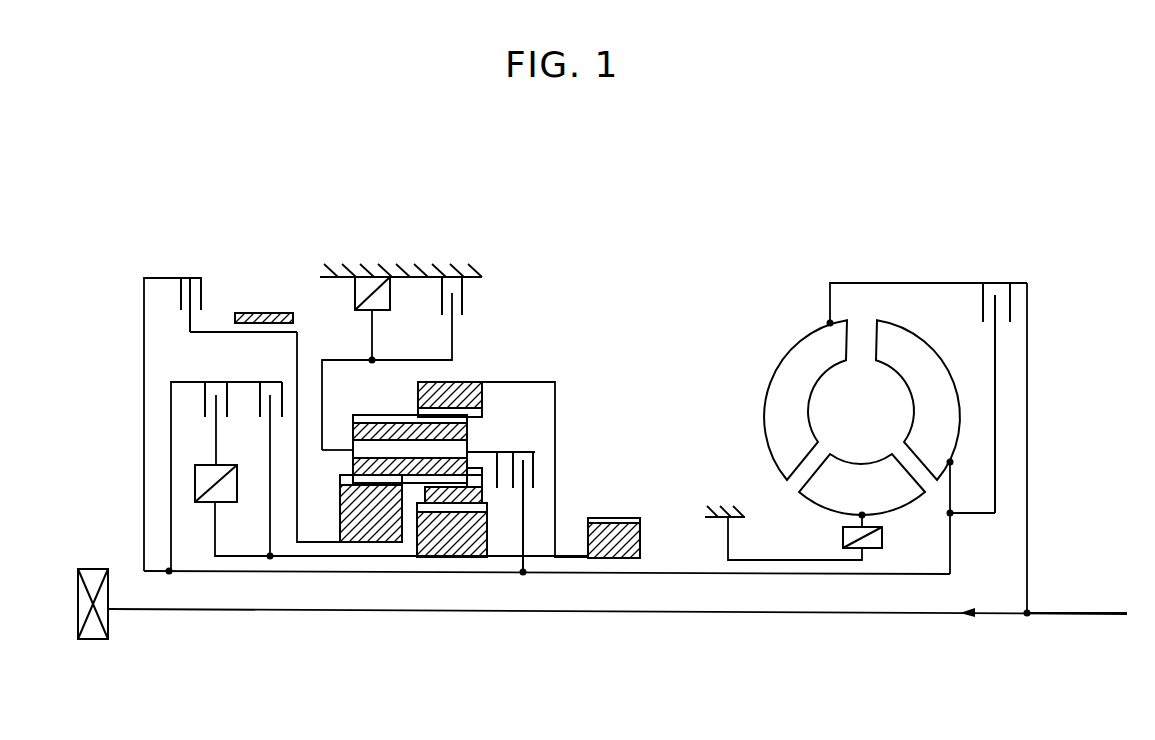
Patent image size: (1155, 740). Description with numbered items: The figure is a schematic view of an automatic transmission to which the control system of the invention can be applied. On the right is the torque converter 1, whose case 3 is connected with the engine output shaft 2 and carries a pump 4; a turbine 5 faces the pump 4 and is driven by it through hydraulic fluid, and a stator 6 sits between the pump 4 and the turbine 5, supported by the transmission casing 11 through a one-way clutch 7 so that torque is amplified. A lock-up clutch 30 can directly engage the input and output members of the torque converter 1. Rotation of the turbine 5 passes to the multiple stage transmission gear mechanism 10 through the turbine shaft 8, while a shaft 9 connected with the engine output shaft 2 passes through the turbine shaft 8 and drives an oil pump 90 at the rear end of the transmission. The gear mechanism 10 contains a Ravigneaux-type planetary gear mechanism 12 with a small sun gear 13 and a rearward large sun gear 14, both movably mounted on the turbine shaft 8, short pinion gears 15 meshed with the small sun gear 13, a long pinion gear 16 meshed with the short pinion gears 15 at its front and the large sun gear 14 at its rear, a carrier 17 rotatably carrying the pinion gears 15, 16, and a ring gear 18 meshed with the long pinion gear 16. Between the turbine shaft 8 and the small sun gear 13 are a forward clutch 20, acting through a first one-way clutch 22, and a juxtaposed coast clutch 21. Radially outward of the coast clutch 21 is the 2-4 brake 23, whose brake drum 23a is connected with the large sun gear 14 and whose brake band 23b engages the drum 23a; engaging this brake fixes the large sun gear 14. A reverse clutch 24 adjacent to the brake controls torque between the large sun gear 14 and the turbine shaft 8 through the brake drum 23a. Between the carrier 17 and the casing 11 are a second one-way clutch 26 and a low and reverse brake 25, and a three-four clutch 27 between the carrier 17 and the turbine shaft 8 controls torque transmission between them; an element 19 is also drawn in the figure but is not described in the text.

The torque converter 1 is at (830, 394).
The engine output shaft 2 is at (1068, 617).
The case 3 is at (919, 282).
The pump 4 is at (770, 373).
The turbine 5 is at (923, 337).
The stator 6 is at (818, 493).
The one-way clutch 7 is at (843, 537).
The turbine shaft 8 is at (371, 573).
The shaft 9 is at (593, 615).
The multiple stage transmission gear mechanism 10 is at (531, 348).
The transmission casing 11 is at (405, 272).
The Ravigneaux-type planetary gear mechanism 12 is at (536, 373).
The small sun gear 13 is at (457, 543).
The large sun gear 14 is at (357, 522).
The short pinion gears 15 is at (482, 480).
The long pinion gear 16 is at (362, 465).
The carrier 17 is at (488, 452).
The ring gear 18 is at (462, 382).
The resistor 19 is at (641, 542).
The forward clutch 20 is at (203, 397).
The coast clutch 21 is at (258, 394).
The first one-way clutch 22 is at (200, 488).
The 2-4 brake 23 is at (268, 260).
The brake drum 23a is at (260, 333).
The brake band 23b is at (237, 313).
The reverse clutch 24 is at (188, 284).
The low & reverse brake 25 is at (438, 295).
The second one-way clutch 26 is at (367, 311).
The contact 27 is at (538, 468).
The lock-up clutch 30 is at (980, 303).
The oil pump 90 is at (110, 618).